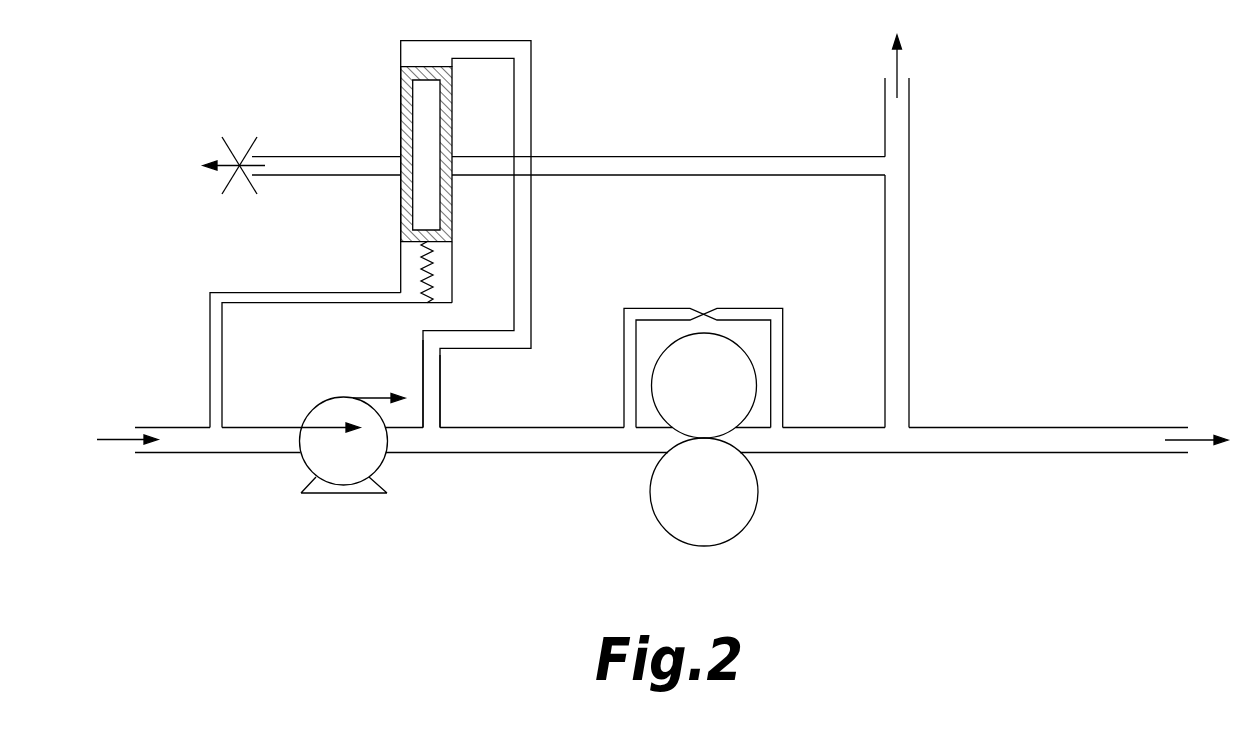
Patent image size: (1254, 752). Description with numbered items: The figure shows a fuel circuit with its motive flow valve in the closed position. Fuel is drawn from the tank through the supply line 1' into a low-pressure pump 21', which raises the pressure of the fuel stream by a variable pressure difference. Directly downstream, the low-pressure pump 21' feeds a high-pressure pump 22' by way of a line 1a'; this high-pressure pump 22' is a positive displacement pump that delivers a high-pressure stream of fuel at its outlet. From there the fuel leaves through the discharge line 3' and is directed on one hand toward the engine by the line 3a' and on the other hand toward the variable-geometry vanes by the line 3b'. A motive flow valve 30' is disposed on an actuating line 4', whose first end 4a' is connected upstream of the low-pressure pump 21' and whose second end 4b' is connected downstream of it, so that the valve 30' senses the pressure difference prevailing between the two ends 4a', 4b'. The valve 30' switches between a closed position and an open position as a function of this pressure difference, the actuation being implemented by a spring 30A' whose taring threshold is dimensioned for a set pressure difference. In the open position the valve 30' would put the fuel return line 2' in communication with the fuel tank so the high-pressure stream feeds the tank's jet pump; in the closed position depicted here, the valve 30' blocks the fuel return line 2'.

The supply line 1' is at (199, 485).
The line 1a' is at (513, 469).
The fuel return line 2' is at (544, 133).
The high pressure discharge pipe 3' is at (823, 397).
The line 3a' is at (1068, 396).
The line 3b' is at (947, 231).
The actuating line 4' is at (508, 234).
The first end of the actuating line 4a' is at (287, 360).
The second end of the actuating line 4b' is at (482, 384).
The low-pressure pump 21' is at (376, 476).
The high-pressure pump 22' is at (737, 459).
The motive flow valve 30' is at (390, 154).
The spring 30A' is at (385, 272).